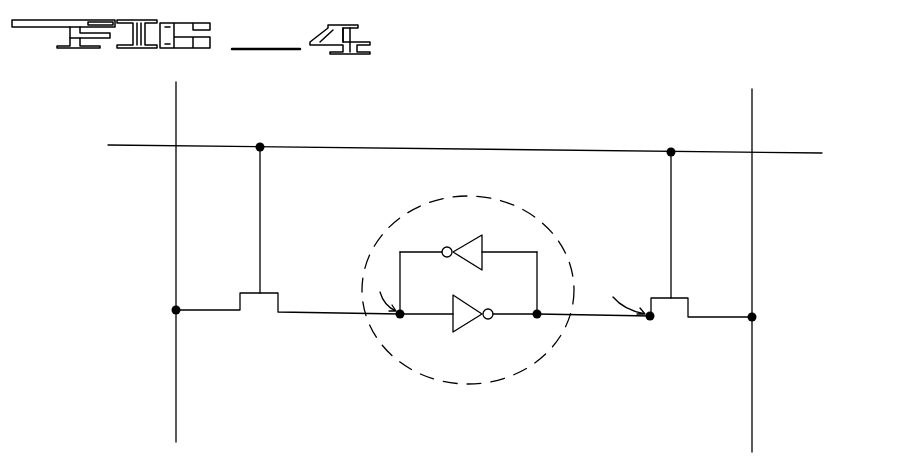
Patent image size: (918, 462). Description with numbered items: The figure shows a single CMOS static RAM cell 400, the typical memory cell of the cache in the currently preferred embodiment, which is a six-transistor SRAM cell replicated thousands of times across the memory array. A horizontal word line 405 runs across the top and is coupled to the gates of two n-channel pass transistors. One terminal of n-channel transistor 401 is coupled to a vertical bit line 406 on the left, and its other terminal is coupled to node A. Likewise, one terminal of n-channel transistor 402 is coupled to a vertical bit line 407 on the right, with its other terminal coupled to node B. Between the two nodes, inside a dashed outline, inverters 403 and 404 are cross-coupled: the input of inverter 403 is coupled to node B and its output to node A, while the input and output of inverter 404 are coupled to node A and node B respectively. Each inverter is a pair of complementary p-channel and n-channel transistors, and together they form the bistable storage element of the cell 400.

The CMOS static RAM cell 400 is at (490, 250).
The n-channel transistor 401 is at (263, 307).
The n-channel transistor 402 is at (670, 310).
The inverter 403 is at (463, 240).
The inverter 404 is at (476, 330).
The word line 405 is at (591, 146).
The bit line 406 is at (168, 367).
The bit line 407 is at (765, 380).